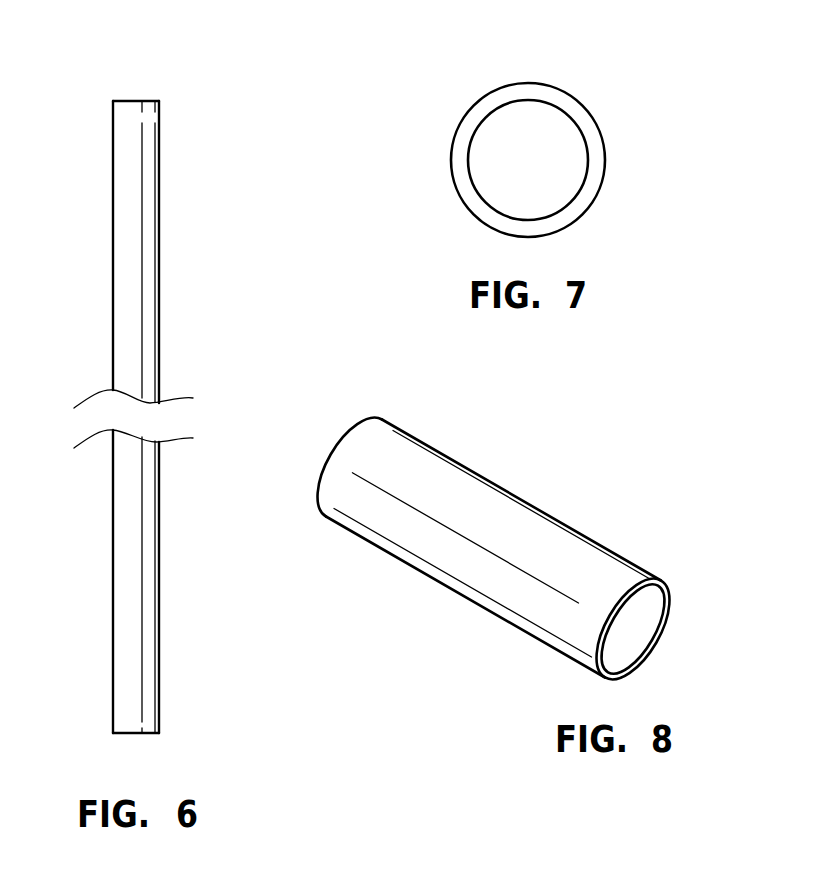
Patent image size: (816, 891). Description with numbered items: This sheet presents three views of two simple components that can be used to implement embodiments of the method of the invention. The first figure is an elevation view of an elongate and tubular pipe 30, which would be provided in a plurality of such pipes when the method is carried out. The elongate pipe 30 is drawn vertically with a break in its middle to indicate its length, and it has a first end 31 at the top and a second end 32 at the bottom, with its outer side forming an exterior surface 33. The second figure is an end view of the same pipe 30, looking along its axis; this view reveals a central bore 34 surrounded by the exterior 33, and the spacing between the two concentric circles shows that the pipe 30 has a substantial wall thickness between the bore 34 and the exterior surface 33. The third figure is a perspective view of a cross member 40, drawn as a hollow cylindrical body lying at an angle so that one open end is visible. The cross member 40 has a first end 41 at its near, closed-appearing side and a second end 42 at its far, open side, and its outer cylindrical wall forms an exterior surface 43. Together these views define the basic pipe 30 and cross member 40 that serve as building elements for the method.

In FIG. 6, the pipe 30 is at (164, 412).
In FIG. 7, the pipe 30 is at (558, 129).
In FIG. 6, the first end 31 is at (137, 100).
In FIG. 6, the second end 32 is at (148, 734).
In FIG. 6, the exterior surface 33 is at (112, 173).
In FIG. 7, the exterior surface 33 is at (527, 83).
In FIG. 7, the bore 34 is at (552, 152).
In FIG. 8, the cross member 40 is at (497, 552).
In FIG. 8, the first end 41 is at (323, 477).
In FIG. 8, the second end 42 is at (670, 578).
In FIG. 8, the exterior surface 43 is at (587, 536).